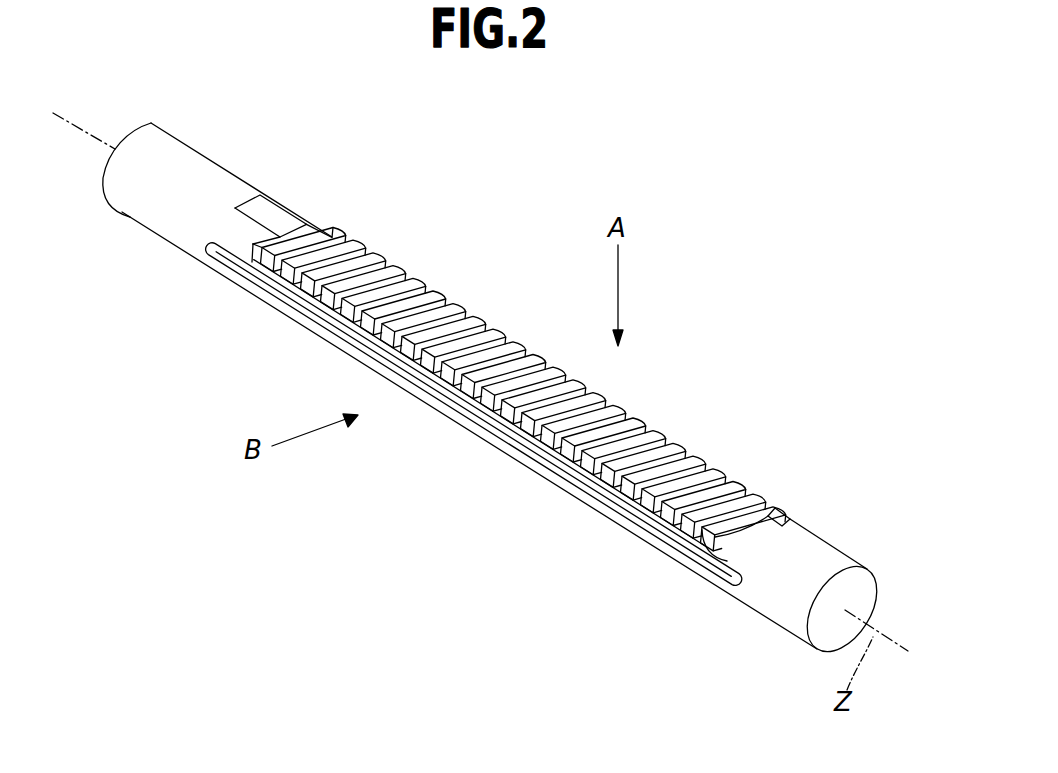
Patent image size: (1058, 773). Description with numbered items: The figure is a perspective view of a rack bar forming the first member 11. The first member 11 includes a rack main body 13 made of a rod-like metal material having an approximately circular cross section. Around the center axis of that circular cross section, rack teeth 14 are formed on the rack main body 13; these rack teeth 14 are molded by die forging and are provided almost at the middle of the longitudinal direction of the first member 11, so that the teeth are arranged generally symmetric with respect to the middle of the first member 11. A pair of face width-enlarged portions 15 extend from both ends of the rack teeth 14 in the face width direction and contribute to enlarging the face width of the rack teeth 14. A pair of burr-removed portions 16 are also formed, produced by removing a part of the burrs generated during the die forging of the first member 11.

The first member 11 is at (497, 387).
The rack main body 13 is at (207, 180).
The rack teeth 14 is at (528, 385).
The face width-enlarged portions 15 is at (328, 216).
The burr-removed portions 16 is at (711, 576).